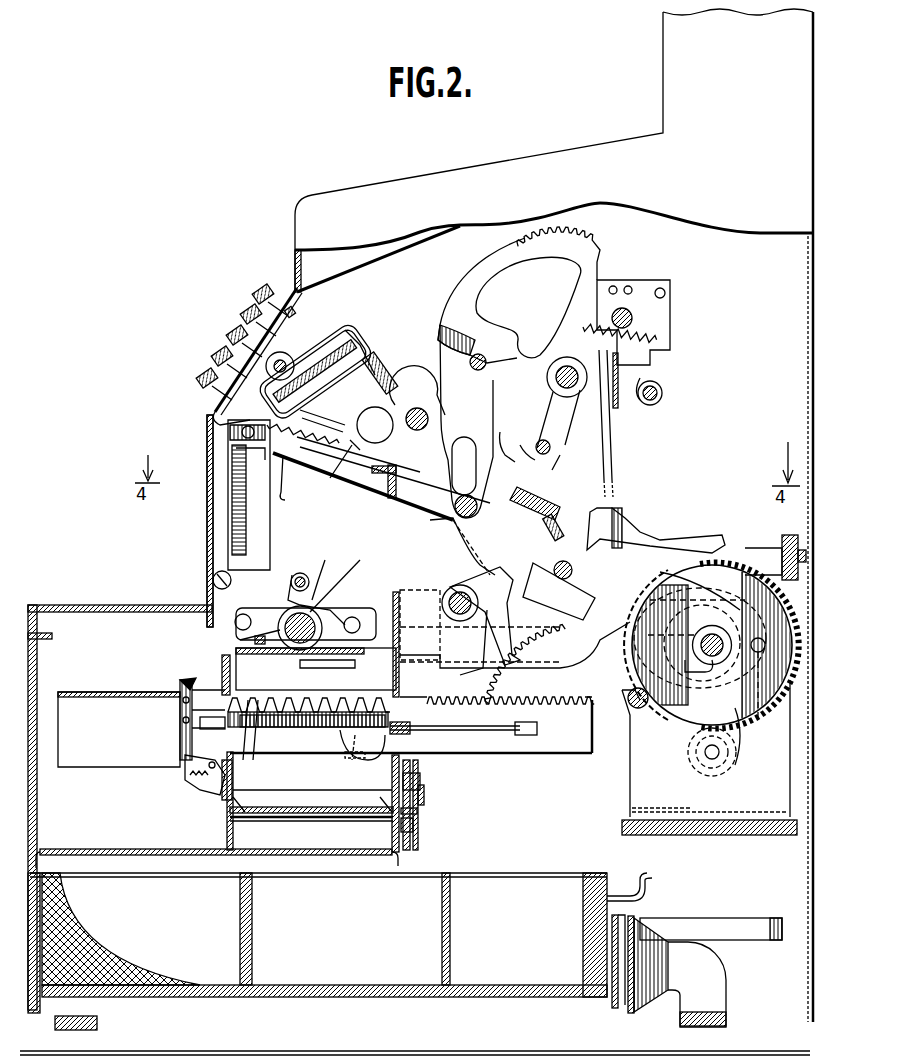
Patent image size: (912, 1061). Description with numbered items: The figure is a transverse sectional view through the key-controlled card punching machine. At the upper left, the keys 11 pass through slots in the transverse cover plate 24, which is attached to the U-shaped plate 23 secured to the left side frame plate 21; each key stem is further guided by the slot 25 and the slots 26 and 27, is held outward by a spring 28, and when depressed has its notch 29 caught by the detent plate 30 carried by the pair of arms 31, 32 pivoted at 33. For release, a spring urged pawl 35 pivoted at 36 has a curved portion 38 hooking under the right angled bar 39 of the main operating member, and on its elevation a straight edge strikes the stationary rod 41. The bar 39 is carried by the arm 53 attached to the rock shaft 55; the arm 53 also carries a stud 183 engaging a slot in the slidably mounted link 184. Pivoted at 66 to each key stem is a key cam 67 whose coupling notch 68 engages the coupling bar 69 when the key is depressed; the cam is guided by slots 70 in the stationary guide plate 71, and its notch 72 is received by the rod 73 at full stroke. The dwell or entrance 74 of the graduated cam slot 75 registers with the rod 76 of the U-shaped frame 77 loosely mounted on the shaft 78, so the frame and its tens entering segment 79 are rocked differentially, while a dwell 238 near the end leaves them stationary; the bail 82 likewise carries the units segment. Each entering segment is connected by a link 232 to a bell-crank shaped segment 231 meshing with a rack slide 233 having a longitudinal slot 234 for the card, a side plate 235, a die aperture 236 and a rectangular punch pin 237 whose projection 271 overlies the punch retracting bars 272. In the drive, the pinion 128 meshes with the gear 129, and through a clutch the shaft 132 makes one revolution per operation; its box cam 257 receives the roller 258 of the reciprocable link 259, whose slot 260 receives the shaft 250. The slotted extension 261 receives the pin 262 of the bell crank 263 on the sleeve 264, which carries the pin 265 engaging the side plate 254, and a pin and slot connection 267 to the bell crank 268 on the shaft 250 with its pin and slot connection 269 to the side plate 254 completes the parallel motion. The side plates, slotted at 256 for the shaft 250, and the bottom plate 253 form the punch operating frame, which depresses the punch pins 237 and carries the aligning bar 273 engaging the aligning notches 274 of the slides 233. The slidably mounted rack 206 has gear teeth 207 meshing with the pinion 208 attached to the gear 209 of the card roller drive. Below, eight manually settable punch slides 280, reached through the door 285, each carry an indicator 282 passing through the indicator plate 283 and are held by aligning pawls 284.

The keys 11 is at (212, 362).
The transverse cover plate 24 is at (298, 306).
The slot 26 is at (296, 315).
The slot 27 is at (213, 413).
The arm 31 is at (325, 350).
The arm 32 is at (330, 357).
The slot 25 is at (312, 400).
The pivot 33 is at (274, 370).
The U-shaped plate 23 is at (360, 348).
The detent plate 30 is at (380, 352).
The pivot 36 is at (420, 395).
The stationary rod 41 is at (430, 413).
The notch 29 is at (350, 400).
The stud 183 is at (230, 432).
The link 184 is at (228, 470).
The spring 28 is at (258, 452).
The pivot 66 is at (304, 447).
The spring urged pawl 35 is at (385, 445).
The left side frame plate 21 is at (363, 490).
The curved portion 38 is at (352, 485).
The right angled bar 39 is at (397, 488).
The arm 53 is at (287, 485).
The door 285 is at (198, 532).
The tens entering segment 79 is at (463, 290).
The U-shaped frame 77 is at (530, 378).
The shaft 78 is at (565, 395).
The bail 82 is at (575, 410).
The rod 76 is at (552, 448).
The key cam 67 is at (506, 434).
The dwell or entrance 74 is at (524, 441).
The slots 70 is at (612, 445).
The stationary guide plate 71 is at (625, 400).
The rod 73 is at (662, 393).
The notch 72 is at (640, 505).
The rock shaft 55 is at (445, 535).
The link 232 is at (485, 550).
The bell-crank shaped segment 231 is at (495, 640).
The cam slot 75 is at (535, 509).
The dwell 238 is at (560, 528).
The coupling notch 68 is at (572, 568).
The coupling bar 69 is at (590, 590).
The reciprocable link 259 is at (575, 648).
The gear 129 is at (655, 585).
The shaft 132 is at (714, 640).
The roller 258 is at (765, 700).
The box cam 257 is at (738, 762).
The pinion 128 is at (696, 760).
The slot 260 is at (207, 600).
The pin and slot connection 269 is at (235, 620).
The bell crank 268 is at (240, 640).
The bottom plate 253 is at (237, 652).
The aligning bar 273 is at (222, 680).
The pin and slot connection 267 is at (285, 685).
The punch retracting bars 272 is at (308, 716).
The projection 271 is at (320, 668).
The punch pin 237 is at (400, 700).
The rack slide 233 is at (540, 752).
The longitudinal slot 234 is at (312, 745).
The aligning notches 274 is at (252, 760).
The plate 235 is at (370, 755).
The die aperture 236 is at (346, 762).
The rack 206 is at (402, 845).
The pinion 208 is at (420, 776).
The gear 209 is at (424, 797).
The gear teeth 207 is at (417, 811).
The punch slide 280 is at (180, 738).
The indicator 282 is at (180, 680).
The indicator plate 283 is at (62, 700).
The aligning pawls 284 is at (188, 768).
The shaft 250 is at (310, 612).
The slot 256 is at (300, 572).
The pin 262 is at (300, 570).
The extension 261 is at (318, 595).
The sleeve 264 is at (355, 568).
The bell crank 263 is at (355, 615).
The side plate 254 is at (270, 625).
The pin 265 is at (400, 588).